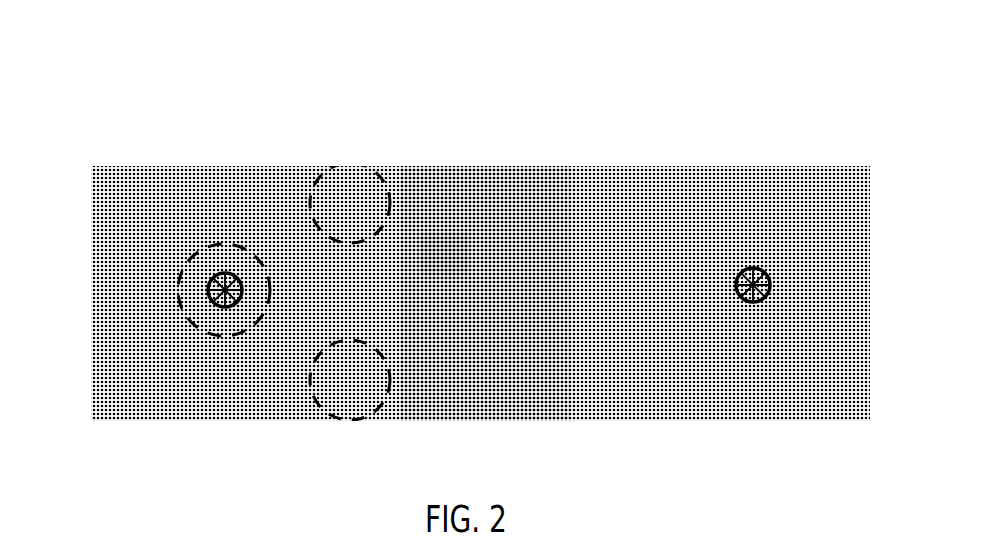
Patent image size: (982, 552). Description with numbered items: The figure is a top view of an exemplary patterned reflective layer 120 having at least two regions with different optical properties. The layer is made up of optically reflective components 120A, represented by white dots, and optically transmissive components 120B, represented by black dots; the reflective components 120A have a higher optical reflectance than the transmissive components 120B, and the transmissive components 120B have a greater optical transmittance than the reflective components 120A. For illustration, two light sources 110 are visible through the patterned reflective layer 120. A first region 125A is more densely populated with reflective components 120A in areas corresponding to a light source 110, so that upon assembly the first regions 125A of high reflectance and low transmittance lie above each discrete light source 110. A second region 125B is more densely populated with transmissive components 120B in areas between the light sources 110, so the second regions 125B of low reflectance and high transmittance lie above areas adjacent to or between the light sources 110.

The patterned reflective layer 120 is at (120, 143).
The optically reflective components 120A is at (465, 295).
The optically transmissive components 120B is at (443, 252).
The first region 125A is at (190, 299).
The second region 125B is at (350, 167).
The light sources 110 is at (753, 268).